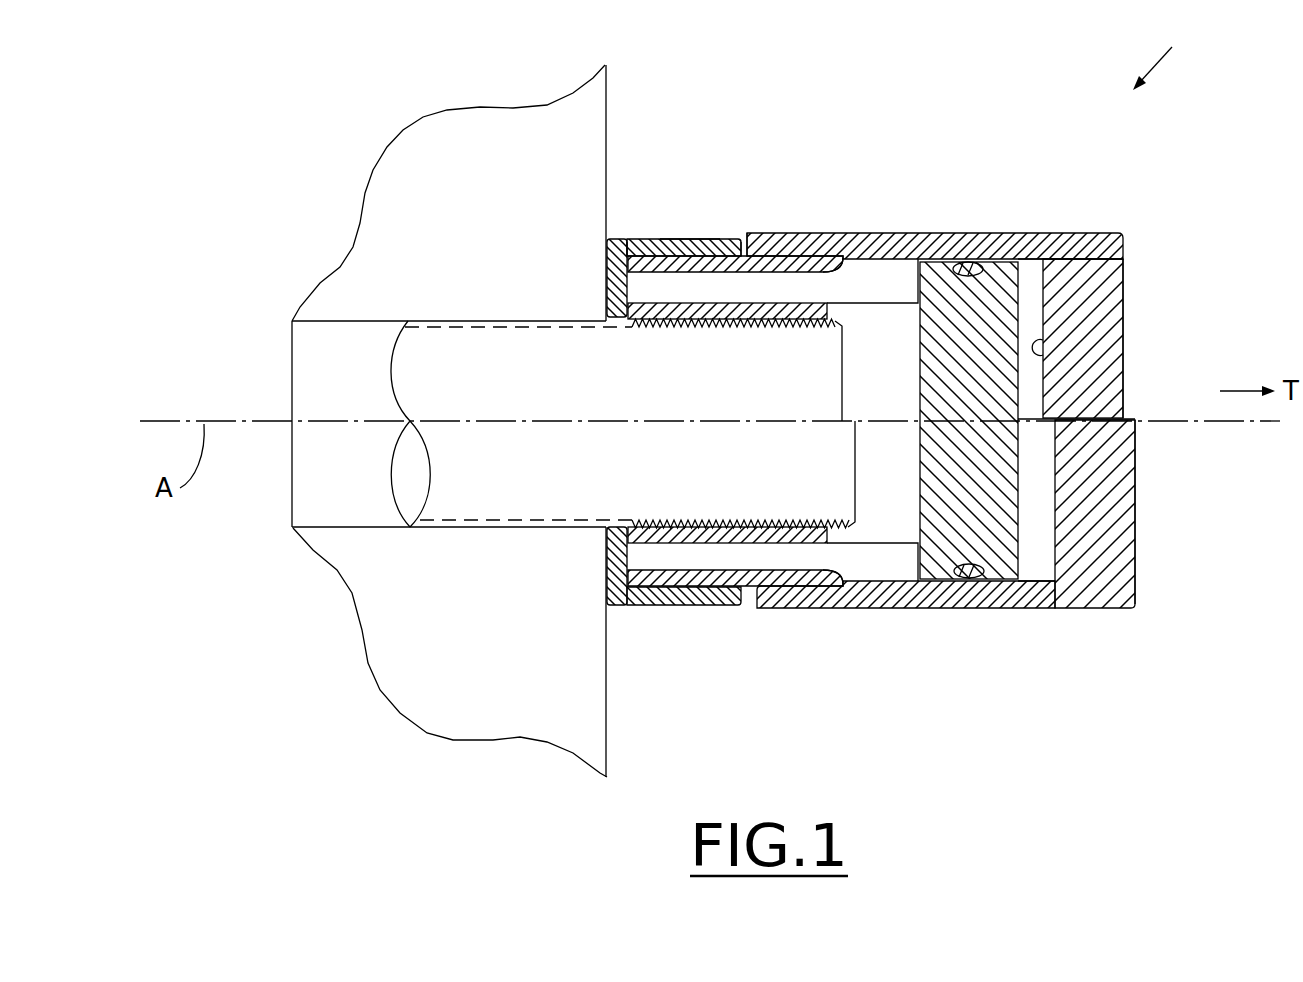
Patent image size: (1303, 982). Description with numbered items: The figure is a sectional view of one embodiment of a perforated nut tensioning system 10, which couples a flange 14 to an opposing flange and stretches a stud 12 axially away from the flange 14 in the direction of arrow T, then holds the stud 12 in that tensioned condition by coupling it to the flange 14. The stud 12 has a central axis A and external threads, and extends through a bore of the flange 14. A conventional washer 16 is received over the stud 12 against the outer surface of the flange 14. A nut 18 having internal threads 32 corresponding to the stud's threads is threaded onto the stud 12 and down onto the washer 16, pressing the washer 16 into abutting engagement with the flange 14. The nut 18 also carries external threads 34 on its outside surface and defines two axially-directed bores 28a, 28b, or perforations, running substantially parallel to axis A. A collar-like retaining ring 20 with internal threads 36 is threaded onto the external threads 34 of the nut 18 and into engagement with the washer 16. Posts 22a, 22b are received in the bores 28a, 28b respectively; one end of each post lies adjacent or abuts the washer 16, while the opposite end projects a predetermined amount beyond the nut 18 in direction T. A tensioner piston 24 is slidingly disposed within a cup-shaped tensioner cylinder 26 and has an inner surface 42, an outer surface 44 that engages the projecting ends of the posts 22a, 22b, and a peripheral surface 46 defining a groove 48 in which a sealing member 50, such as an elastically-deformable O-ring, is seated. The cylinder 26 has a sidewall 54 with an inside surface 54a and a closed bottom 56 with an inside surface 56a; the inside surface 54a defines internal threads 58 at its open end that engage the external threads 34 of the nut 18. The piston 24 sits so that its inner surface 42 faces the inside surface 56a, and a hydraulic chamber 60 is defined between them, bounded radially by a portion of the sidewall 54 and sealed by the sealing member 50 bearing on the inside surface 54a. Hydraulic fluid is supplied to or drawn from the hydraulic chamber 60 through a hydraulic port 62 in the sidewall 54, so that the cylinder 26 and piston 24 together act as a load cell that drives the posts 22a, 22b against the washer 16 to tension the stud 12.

The perforated nut tensioning system 10 is at (1219, 58).
The stud 12 is at (588, 480).
The flange 14 is at (515, 201).
The washer 16 is at (620, 607).
The nut 18 is at (745, 590).
The retaining ring 20 is at (672, 607).
The post 22a is at (882, 575).
The post 22b is at (843, 257).
The tensioner piston 24 is at (1020, 304).
The tensioner cylinder 26 is at (1125, 258).
The bore 28a is at (790, 568).
The bore 28b is at (765, 273).
The internal threads 32 is at (770, 517).
The external threads 34 is at (743, 254).
The internal threads 36 is at (687, 254).
The inner surface 42 is at (1020, 453).
The outer surface 44 is at (918, 357).
The peripheral surface 46 is at (1005, 258).
The groove 48 is at (968, 260).
The sealing member 50 is at (978, 583).
The sidewall 54 is at (921, 232).
The inside surface 54a is at (1060, 280).
The closed bottom 56 is at (1132, 560).
The inside surface 56a is at (1043, 350).
The internal threads 58 is at (648, 255).
The hydraulic chamber 60 is at (1032, 490).
The hydraulic port 62 is at (1040, 583).